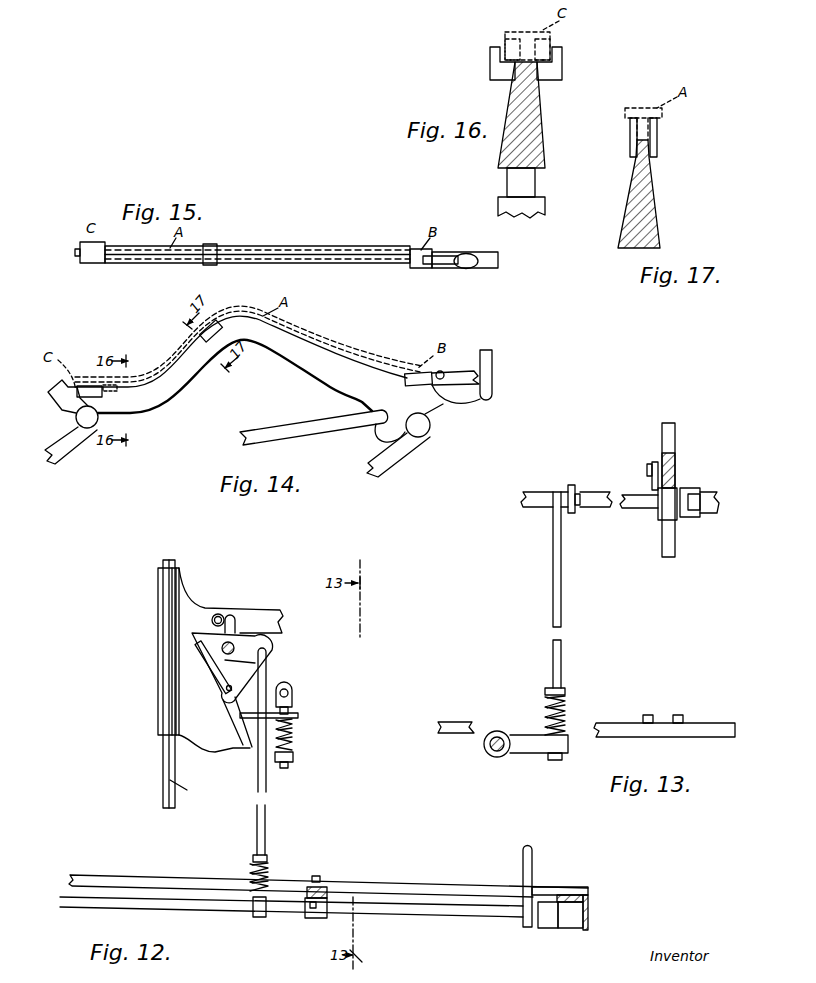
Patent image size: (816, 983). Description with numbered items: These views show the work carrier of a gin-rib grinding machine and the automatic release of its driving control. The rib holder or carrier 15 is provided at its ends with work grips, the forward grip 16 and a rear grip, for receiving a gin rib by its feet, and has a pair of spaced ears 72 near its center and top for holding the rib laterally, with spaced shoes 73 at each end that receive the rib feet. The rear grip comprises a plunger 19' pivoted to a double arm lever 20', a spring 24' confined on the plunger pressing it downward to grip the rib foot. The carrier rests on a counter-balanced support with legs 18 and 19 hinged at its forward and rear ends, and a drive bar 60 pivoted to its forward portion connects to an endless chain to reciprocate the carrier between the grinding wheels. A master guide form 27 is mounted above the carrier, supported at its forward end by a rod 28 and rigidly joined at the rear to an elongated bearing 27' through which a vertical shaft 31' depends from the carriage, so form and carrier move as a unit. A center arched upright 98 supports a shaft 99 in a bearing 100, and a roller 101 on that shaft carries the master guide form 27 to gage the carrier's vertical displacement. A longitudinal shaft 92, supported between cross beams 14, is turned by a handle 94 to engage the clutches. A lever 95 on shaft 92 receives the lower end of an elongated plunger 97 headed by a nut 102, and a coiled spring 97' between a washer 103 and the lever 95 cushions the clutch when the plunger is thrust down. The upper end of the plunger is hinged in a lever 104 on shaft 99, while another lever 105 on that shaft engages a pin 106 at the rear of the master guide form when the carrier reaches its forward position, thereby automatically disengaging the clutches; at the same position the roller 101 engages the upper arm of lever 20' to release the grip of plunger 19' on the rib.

In FIG. 12, the cross beams 14 is at (588, 917).
In FIG. 16, the rib holder or carrier 15 is at (537, 124).
In FIG. 17, the rib holder or carrier 15 is at (655, 203).
In FIG. 15, the rib holder or carrier 15 is at (316, 249).
In FIG. 14, the rib holder or carrier 15 is at (183, 380).
In FIG. 15, the work grip 16 is at (466, 256).
In FIG. 14, the work grip 16 is at (467, 373).
In FIG. 14, the leg 18 is at (390, 450).
In FIG. 14, the leg 19 is at (71, 456).
In FIG. 14, the rod 28 is at (485, 357).
In FIG. 14, the drive bar 60 is at (322, 423).
In FIG. 17, the spaced ears 72 is at (657, 141).
In FIG. 15, the spaced ears 72 is at (213, 249).
In FIG. 14, the spaced ears 72 is at (236, 318).
In FIG. 16, the spaced shoes 73 is at (555, 68).
In FIG. 15, the spaced shoes 73 is at (100, 263).
In FIG. 14, the spaced shoes 73 is at (80, 393).
In FIG. 13, the shaft 92 is at (490, 752).
In FIG. 12, the shaft 92 is at (412, 912).
In FIG. 12, the handle 94 is at (532, 864).
In FIG. 13, the lever 95 is at (535, 748).
In FIG. 12, the lever 95 is at (260, 917).
In FIG. 13, the elongated plunger 97 is at (573, 590).
In FIG. 12, the elongated plunger 97 is at (280, 751).
In FIG. 13, the coiled spring 97' is at (575, 712).
In FIG. 12, the coiled spring 97' is at (281, 874).
In FIG. 13, the center arched upright 98 is at (705, 508).
In FIG. 13, the shaft 99 is at (532, 495).
In FIG. 12, the shaft 99 is at (225, 663).
In FIG. 13, the bearing 100 is at (690, 492).
In FIG. 13, the roller 101 is at (665, 513).
In FIG. 12, the roller 101 is at (240, 663).
In FIG. 13, the nut 102 is at (563, 760).
In FIG. 13, the washer 103 is at (563, 692).
In FIG. 12, the washer 103 is at (267, 857).
In FIG. 13, the lever 104 is at (572, 485).
In FIG. 12, the lever 104 is at (273, 647).
In FIG. 13, the lever 105 is at (648, 485).
In FIG. 12, the lever 105 is at (233, 627).
In FIG. 13, the pin 106 is at (647, 468).
In FIG. 12, the pin 106 is at (220, 617).
In FIG. 13, the master guide form 27 is at (685, 490).
In FIG. 12, the master guide form 27 is at (244, 660).
In FIG. 12, the elongated bearing 27' is at (150, 651).
In FIG. 12, the vertical shaft 31' is at (157, 684).
In FIG. 12, the double arm lever 20' is at (290, 697).
In FIG. 12, the spring 24' is at (308, 734).
In FIG. 12, the plunger 19' is at (302, 760).